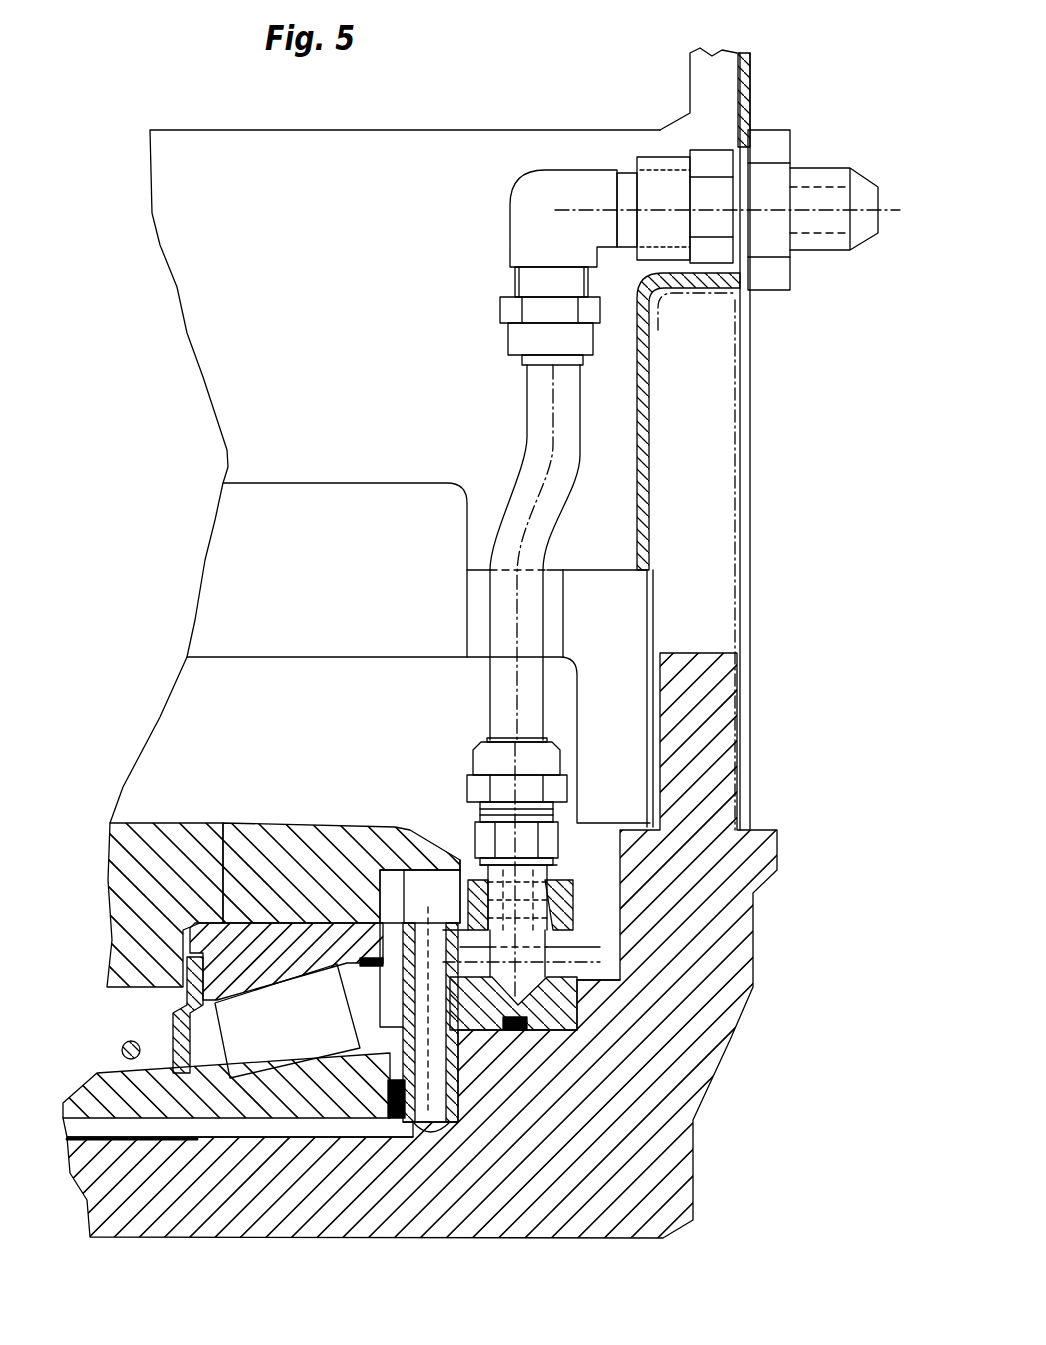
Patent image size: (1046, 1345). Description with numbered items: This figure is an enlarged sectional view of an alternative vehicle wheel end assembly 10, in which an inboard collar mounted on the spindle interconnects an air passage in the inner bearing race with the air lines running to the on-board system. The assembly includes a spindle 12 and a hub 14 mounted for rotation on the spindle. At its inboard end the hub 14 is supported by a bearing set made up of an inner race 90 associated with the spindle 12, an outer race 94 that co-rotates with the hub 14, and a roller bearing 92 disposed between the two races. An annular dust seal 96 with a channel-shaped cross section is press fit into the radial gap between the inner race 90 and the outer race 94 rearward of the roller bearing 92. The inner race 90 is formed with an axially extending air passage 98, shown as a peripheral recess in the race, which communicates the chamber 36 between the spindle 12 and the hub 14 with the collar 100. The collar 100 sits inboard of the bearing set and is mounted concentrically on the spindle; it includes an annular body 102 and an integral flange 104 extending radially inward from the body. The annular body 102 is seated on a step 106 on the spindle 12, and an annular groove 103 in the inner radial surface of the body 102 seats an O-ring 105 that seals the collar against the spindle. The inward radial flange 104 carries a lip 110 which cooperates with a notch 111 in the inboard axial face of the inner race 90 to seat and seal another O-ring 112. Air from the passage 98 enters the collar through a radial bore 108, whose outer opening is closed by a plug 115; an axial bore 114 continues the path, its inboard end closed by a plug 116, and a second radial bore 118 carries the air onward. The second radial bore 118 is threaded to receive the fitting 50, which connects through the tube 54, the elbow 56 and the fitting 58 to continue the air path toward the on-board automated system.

The vehicle wheel end assembly 10 is at (178, 447).
The spindle 12 is at (300, 1220).
The hub 14 is at (257, 842).
The chamber 36 is at (145, 1032).
The fitting 50 is at (476, 758).
The tube 54 is at (537, 428).
The elbow 56 is at (520, 205).
The fitting 58 is at (812, 168).
The inner race 90 is at (83, 1077).
The roller bearing 92 is at (260, 1038).
The outer race 94 is at (224, 845).
The annular dust seal 96 is at (380, 978).
The air passage 98 is at (58, 1122).
The collar 100 is at (472, 870).
The annular body 102 is at (563, 884).
The annular groove 103 is at (578, 1045).
The flange 104 is at (465, 1060).
The O-ring 105 is at (520, 1032).
The step 106 is at (578, 1010).
The radial bore 108 is at (413, 1125).
The lip 110 is at (390, 1135).
The notch 111 is at (358, 1036).
The O-ring 112 is at (366, 1120).
The axial bore 114 is at (447, 1097).
The plug 115 is at (395, 866).
The plug 116 is at (567, 958).
The second radial bore 118 is at (530, 878).